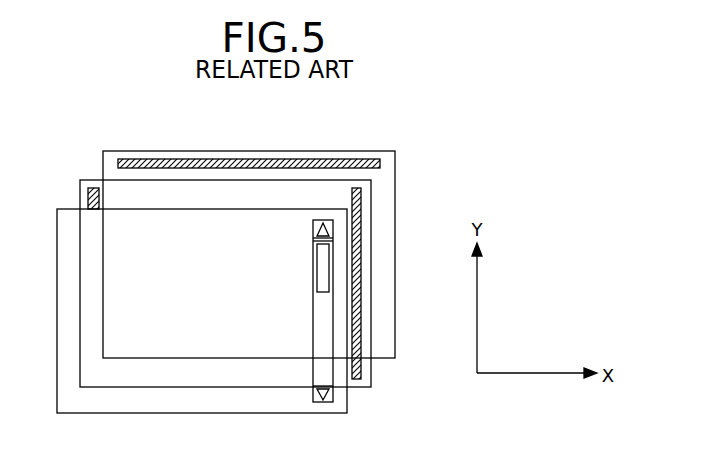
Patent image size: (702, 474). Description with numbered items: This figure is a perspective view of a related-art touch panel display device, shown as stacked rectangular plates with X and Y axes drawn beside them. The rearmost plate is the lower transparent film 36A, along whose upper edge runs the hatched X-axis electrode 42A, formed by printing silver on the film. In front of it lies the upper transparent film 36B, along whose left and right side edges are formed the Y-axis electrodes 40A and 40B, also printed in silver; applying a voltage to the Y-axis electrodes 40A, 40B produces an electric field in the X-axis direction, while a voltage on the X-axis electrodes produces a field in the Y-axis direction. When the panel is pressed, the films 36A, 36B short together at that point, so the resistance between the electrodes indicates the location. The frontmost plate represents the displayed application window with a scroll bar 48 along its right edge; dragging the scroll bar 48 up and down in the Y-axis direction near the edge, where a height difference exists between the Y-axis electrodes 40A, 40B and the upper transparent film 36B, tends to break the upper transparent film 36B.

The lower transparent film 36A is at (282, 151).
The upper transparent film 36B is at (208, 180).
The Y-axis electrode 40A is at (88, 195).
The Y-axis electrode 40B is at (358, 195).
The X-axis electrode 42A is at (357, 160).
The scroll bar 48 is at (333, 273).